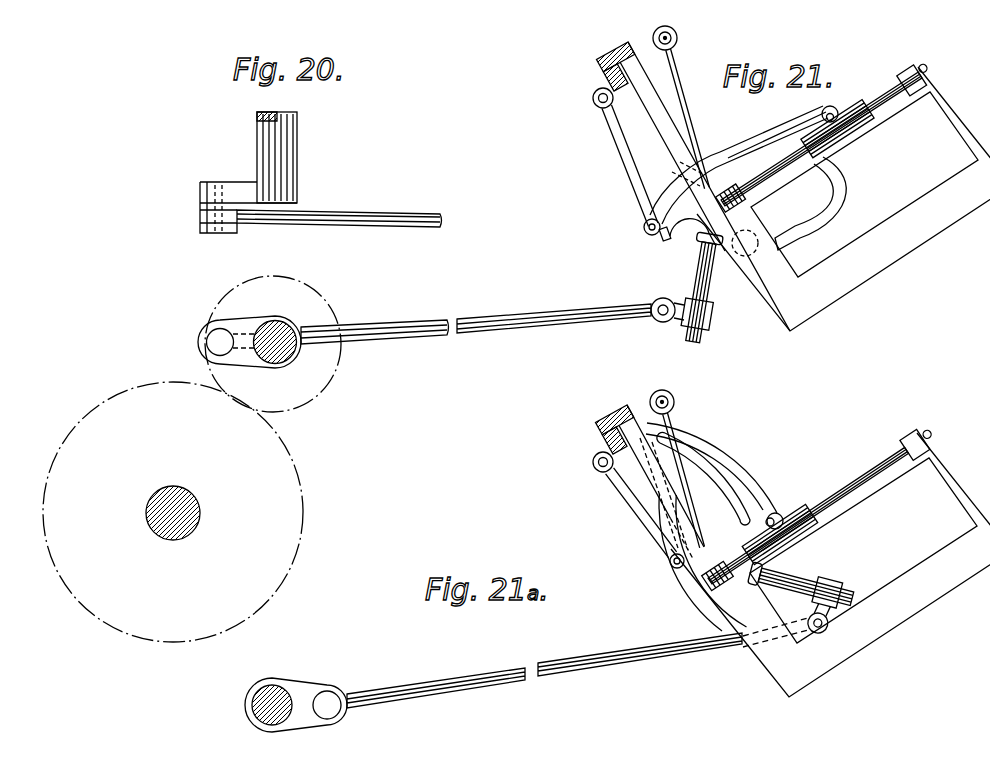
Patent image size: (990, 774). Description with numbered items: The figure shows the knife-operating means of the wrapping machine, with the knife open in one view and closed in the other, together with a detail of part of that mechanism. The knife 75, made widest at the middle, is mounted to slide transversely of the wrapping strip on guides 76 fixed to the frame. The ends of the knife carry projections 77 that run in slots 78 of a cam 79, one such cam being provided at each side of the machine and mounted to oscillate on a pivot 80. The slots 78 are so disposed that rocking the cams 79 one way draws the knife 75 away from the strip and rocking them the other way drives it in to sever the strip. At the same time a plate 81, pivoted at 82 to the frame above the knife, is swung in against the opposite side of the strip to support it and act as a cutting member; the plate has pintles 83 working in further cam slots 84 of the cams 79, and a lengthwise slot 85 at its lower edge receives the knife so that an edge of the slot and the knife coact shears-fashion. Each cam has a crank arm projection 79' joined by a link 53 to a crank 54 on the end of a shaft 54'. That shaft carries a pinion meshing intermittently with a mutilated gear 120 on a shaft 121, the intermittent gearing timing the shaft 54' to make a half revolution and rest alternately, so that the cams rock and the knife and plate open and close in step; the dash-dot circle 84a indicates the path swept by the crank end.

In FIG. 20, the link 53 is at (386, 215).
In FIG. 21A, the link 53 is at (614, 652).
In FIG. 20, the crank 54 is at (249, 263).
In FIG. 21A, the crank 54 is at (296, 697).
In FIG. 20, the shaft 54' is at (288, 253).
In FIG. 21A, the shaft 54' is at (253, 705).
In FIG. 21, the knife 75 is at (765, 192).
In FIG. 21A, the knife 75 is at (702, 575).
In FIG. 21, the guides 76 is at (689, 100).
In FIG. 21A, the guides 76 is at (690, 507).
In FIG. 21, the projections 77 is at (835, 108).
In FIG. 21A, the projections 77 is at (781, 514).
In FIG. 21, the cam slots 78 is at (812, 200).
In FIG. 21A, the cam slots 78 is at (750, 494).
In FIG. 21, the cam 79 is at (779, 134).
In FIG. 21A, the cam 79 is at (714, 476).
In FIG. 21, the crank arm projection 79' is at (687, 288).
In FIG. 21A, the crank arm projection 79' is at (797, 597).
In FIG. 21, the pivots 80 is at (711, 190).
In FIG. 21A, the pivots 80 is at (703, 537).
In FIG. 21, the plate 81 is at (628, 151).
In FIG. 21A, the plate 81 is at (647, 494).
In FIG. 21, the pivot 82 is at (596, 100).
In FIG. 21A, the pivot 82 is at (604, 473).
In FIG. 21, the pintles 83 is at (643, 228).
In FIG. 21A, the pintles 83 is at (669, 558).
In FIG. 21, the cam slots 84 is at (672, 196).
In FIG. 21A, the cam slots 84 is at (675, 578).
In FIG. 20, the circle of travel 84a is at (286, 344).
In FIG. 21, the slot 85 is at (663, 242).
In FIG. 20, the mutilated gear 120 is at (297, 475).
In FIG. 20, the shaft 121 is at (180, 489).